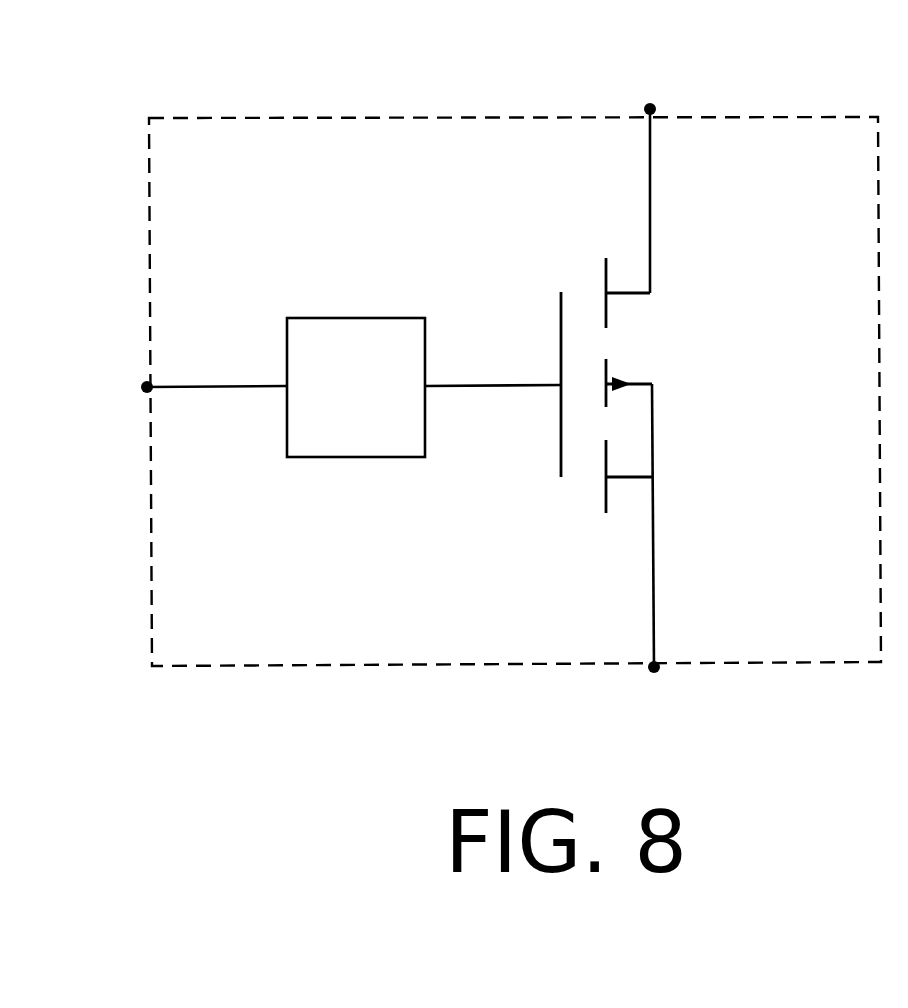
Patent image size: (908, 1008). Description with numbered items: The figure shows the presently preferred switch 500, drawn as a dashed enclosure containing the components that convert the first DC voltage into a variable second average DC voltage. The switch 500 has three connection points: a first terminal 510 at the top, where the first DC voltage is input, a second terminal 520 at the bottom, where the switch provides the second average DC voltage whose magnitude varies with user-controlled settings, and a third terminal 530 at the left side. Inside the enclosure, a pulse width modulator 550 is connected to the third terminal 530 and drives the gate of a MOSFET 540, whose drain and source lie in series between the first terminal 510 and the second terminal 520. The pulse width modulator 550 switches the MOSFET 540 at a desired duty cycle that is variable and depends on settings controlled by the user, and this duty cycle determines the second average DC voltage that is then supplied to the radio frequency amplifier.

The switch 500 is at (515, 359).
The first terminal 510 is at (648, 171).
The second terminal 520 is at (654, 556).
The third terminal 530 is at (182, 387).
The MOSFET 540 is at (637, 385).
The pulse width modulator 550 is at (424, 387).